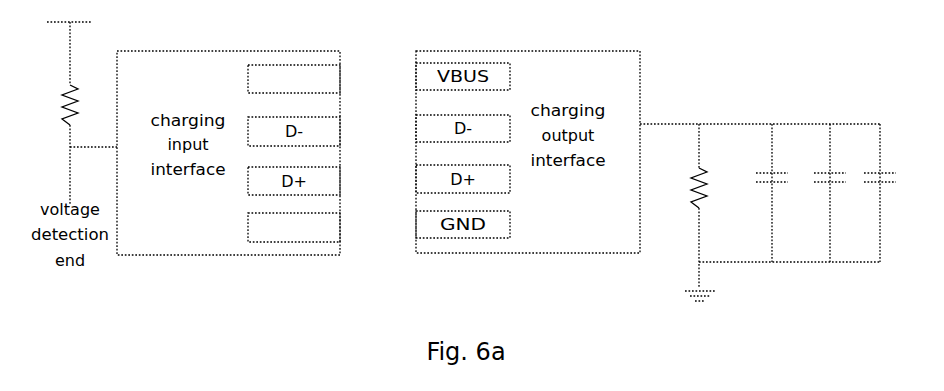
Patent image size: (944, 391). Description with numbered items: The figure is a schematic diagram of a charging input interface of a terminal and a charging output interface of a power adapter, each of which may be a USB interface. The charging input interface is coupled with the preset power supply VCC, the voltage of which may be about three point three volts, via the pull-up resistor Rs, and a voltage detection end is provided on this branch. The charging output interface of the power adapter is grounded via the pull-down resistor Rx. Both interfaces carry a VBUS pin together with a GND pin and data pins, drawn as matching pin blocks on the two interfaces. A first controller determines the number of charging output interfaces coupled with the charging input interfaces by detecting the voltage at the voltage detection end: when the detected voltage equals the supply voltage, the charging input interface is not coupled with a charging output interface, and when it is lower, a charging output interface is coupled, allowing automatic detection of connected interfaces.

The pull-up resistor Rs is at (58, 105).
The pull-down resistor Rx is at (681, 188).
The preset power supply VCC is at (69, 43).
The VBUS pin of charging input interface VBUS is at (294, 79).
The GND pin of charging input interface GND is at (294, 227).